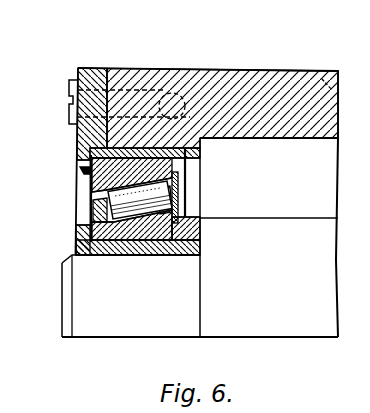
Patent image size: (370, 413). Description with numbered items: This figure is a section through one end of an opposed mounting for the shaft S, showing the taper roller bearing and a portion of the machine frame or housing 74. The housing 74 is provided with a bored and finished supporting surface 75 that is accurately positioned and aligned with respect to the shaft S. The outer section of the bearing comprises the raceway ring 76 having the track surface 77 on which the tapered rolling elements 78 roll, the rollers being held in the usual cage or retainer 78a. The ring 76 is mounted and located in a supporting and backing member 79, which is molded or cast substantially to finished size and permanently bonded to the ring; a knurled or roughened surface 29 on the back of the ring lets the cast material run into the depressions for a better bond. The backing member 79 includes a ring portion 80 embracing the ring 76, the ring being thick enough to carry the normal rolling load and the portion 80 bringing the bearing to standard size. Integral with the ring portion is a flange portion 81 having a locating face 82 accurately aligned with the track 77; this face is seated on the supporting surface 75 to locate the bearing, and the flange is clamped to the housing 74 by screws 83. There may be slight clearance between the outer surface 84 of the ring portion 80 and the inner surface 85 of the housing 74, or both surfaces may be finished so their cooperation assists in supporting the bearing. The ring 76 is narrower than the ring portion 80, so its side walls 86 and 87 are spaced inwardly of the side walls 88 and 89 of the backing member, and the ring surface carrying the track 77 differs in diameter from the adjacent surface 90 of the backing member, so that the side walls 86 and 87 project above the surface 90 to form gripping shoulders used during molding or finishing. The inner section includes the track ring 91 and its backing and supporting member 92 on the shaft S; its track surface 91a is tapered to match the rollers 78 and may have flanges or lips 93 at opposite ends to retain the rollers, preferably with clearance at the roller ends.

The frame or housing 74 is at (145, 138).
The supporting surface 75 is at (103, 73).
The flange portion 81 is at (77, 73).
The screws 83 is at (68, 86).
The supporting and backing member 79 is at (70, 138).
The locating face or surface 82 is at (132, 74).
The knurled or roughened surface 29 is at (185, 110).
The outer surface of ring portion 84 is at (217, 69).
The inner surface of frame or housing 85 is at (193, 153).
The ring portion 80 is at (190, 168).
The side wall of ring 87 is at (183, 190).
The side wall of backing member 89 is at (200, 202).
The flanges or lips 93 is at (192, 210).
The backing and supporting member 92 is at (200, 254).
The raceway ring 76 is at (100, 160).
The surface of backing member 90 is at (90, 174).
The side wall of ring 86 is at (105, 180).
The side wall of backing member 88 is at (85, 193).
The cage or retainer 78a is at (107, 214).
The track surface 77 is at (140, 200).
The tapered rolling elements 78 is at (137, 252).
The track surface 91a is at (110, 252).
The track ring 91 is at (168, 233).
The shaft S is at (275, 330).